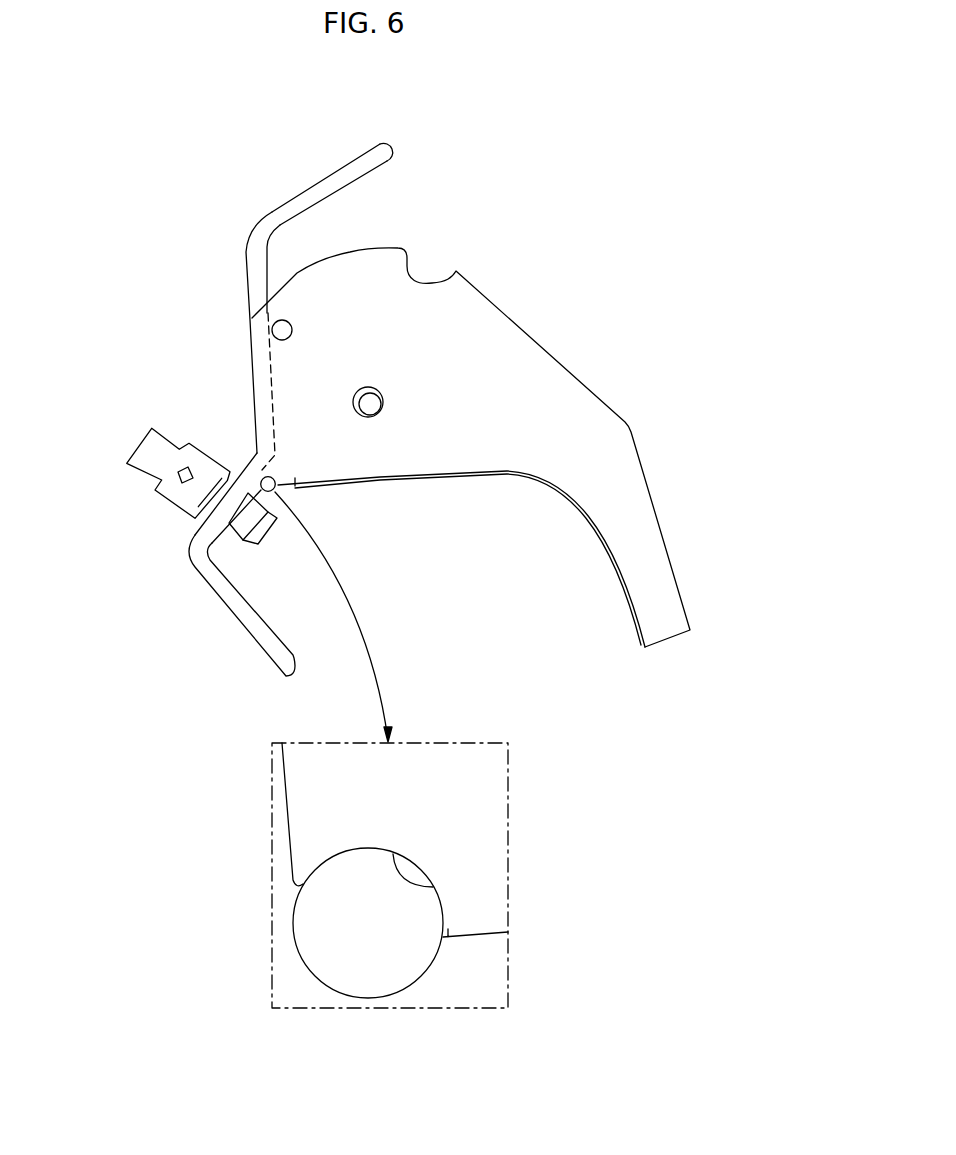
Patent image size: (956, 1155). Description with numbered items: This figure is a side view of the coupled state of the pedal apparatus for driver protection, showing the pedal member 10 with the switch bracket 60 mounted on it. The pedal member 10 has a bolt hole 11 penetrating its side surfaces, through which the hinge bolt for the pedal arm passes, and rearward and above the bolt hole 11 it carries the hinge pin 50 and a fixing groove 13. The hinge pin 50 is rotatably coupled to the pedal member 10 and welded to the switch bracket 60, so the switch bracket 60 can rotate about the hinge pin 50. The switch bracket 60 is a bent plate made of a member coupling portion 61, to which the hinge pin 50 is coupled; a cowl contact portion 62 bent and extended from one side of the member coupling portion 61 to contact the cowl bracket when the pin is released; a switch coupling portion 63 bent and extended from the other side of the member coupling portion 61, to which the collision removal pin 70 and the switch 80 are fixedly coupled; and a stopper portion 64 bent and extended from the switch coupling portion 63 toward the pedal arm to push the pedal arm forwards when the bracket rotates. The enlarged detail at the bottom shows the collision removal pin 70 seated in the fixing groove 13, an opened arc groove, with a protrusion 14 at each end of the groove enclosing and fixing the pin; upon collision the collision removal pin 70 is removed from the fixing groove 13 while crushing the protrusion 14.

The pedal member 10 is at (498, 337).
The bolt hole 11 is at (380, 403).
The fixing groove 13 is at (433, 887).
The protrusion 14 is at (292, 882).
The hinge pin 50 is at (272, 331).
The switch bracket 60 is at (242, 384).
The member coupling portion 61 is at (251, 275).
The cowl contact portion 62 is at (338, 177).
The switch coupling portion 63 is at (207, 532).
The stopper portion 64 is at (260, 640).
The collision removal pin 70 is at (263, 476).
The switch 80 is at (148, 451).